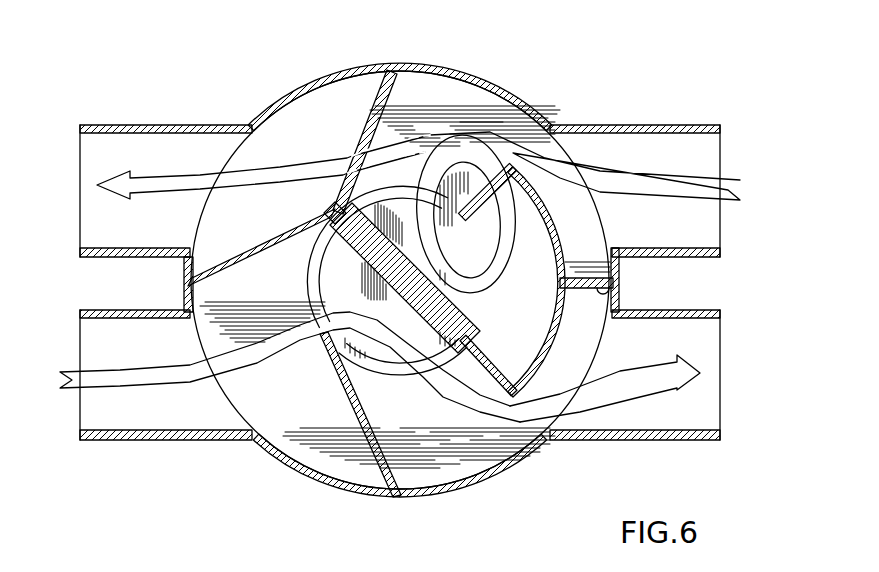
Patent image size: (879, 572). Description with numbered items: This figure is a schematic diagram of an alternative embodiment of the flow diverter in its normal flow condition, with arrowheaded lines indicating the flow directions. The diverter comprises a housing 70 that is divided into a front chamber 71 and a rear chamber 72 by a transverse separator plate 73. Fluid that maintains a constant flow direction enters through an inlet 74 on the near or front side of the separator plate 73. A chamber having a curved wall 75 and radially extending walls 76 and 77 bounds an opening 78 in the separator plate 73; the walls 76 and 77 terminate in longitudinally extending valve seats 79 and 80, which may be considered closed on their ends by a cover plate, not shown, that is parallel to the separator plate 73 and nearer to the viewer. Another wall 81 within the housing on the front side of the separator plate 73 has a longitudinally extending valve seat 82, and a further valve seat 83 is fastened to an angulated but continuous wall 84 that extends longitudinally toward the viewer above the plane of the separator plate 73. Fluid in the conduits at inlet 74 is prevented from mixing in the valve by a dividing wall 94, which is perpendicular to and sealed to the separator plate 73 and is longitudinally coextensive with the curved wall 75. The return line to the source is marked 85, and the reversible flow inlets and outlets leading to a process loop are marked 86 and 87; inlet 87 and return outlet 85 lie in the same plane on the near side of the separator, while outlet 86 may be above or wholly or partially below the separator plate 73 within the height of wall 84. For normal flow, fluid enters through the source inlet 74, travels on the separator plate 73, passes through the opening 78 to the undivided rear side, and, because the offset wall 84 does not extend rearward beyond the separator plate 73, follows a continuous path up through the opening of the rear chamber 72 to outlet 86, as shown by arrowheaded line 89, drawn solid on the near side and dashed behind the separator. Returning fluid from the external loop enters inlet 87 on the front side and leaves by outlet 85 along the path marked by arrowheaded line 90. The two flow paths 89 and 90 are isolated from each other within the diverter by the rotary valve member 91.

The housing 70 is at (481, 64).
The front chamber 71 is at (412, 95).
The rear chamber 72 is at (332, 100).
The transverse separator plate 73 is at (488, 118).
The inlet 74 is at (705, 146).
The curved wall 75 is at (560, 233).
The radially extending wall 76 is at (506, 168).
The radially extending wall 77 is at (490, 370).
The opening 78 is at (525, 347).
The valve seat 79 is at (467, 222).
The valve seat 80 is at (482, 330).
The wall 81 is at (395, 436).
The valve seat 82 is at (370, 358).
The valve seat 83 is at (348, 242).
The angulated wall 84 is at (398, 128).
The return outlet 85 is at (705, 410).
The outlet 86 is at (80, 183).
The inlet 87 is at (80, 420).
The arrowheaded flow line 89 is at (747, 199).
The arrowheaded return flow line 90 is at (70, 375).
The rotary valve member 91 is at (385, 280).
The dividing wall 94 is at (611, 292).